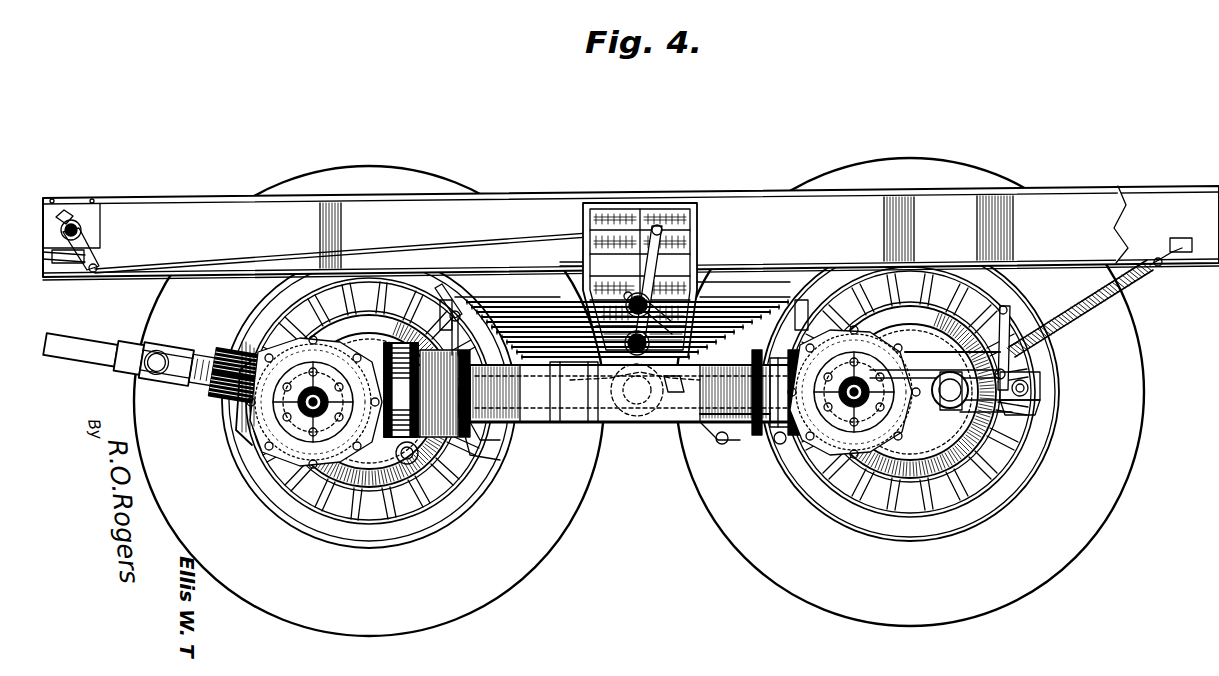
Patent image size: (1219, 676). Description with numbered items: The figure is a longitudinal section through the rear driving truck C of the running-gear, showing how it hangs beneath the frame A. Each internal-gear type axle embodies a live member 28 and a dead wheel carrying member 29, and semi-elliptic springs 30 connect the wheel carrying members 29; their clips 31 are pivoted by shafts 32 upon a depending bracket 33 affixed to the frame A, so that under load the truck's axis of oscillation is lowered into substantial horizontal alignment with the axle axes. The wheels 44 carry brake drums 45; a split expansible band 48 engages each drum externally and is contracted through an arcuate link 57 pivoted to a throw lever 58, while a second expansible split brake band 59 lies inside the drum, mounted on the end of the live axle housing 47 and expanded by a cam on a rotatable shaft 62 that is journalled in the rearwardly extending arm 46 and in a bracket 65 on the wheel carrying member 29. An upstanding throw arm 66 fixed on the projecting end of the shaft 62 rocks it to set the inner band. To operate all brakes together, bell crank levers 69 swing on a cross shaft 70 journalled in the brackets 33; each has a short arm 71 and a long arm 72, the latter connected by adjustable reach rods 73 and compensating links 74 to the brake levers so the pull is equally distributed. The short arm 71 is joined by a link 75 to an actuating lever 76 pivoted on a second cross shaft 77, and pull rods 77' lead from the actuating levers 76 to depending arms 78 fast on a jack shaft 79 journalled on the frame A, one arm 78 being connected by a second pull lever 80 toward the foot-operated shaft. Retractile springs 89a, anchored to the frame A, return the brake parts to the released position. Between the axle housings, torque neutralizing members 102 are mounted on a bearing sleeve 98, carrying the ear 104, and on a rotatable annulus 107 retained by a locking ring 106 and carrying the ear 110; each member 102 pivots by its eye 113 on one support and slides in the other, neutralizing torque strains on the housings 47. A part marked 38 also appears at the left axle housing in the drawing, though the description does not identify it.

The frame A is at (631, 231).
The rear driving truck C is at (632, 508).
The live member 28 is at (280, 462).
The dead wheel carrying member 29 is at (380, 488).
The springs 30 is at (752, 318).
The clips 31 is at (607, 386).
The shafts 32 is at (636, 396).
The depending bracket 33 is at (700, 287).
The differential housing 38 is at (401, 390).
The wheels 44 is at (639, 397).
The brake drums 45 is at (350, 515).
The rearwardly extending arm 46 is at (1040, 388).
The live axle housing 47 is at (262, 480).
The split expansible band 48 is at (640, 395).
The arcuate link 57 is at (366, 286).
The throw lever 58 is at (444, 302).
The second expansible split brake band 59 is at (414, 462).
The rotatable shaft 62 is at (1040, 404).
The bracket 65 is at (952, 410).
The upstanding throw arm 66 is at (1012, 378).
The bell crank levers 69 is at (600, 381).
The cross shaft 70 is at (585, 328).
The short arm 71 is at (660, 317).
The long arm 72 is at (674, 393).
The adjustable reach rods 73 is at (512, 328).
The compensating links 74 is at (456, 322).
The link 75 is at (626, 302).
The actuating lever 76 is at (668, 248).
The second cross shaft 77 is at (580, 253).
The pull rods 77' is at (376, 246).
The depending arms 78 is at (94, 240).
The jack shaft 79 is at (74, 220).
The second pull lever 80 is at (70, 277).
The retractile springs 89a is at (1138, 280).
The bearing sleeve 98 is at (427, 393).
The torque neutralizing members 102 is at (566, 424).
The ear 104 is at (502, 460).
The locking ring 106 is at (716, 438).
The rotatable annulus 107 is at (750, 440).
The ear 110 is at (740, 417).
The eye 113 is at (498, 440).